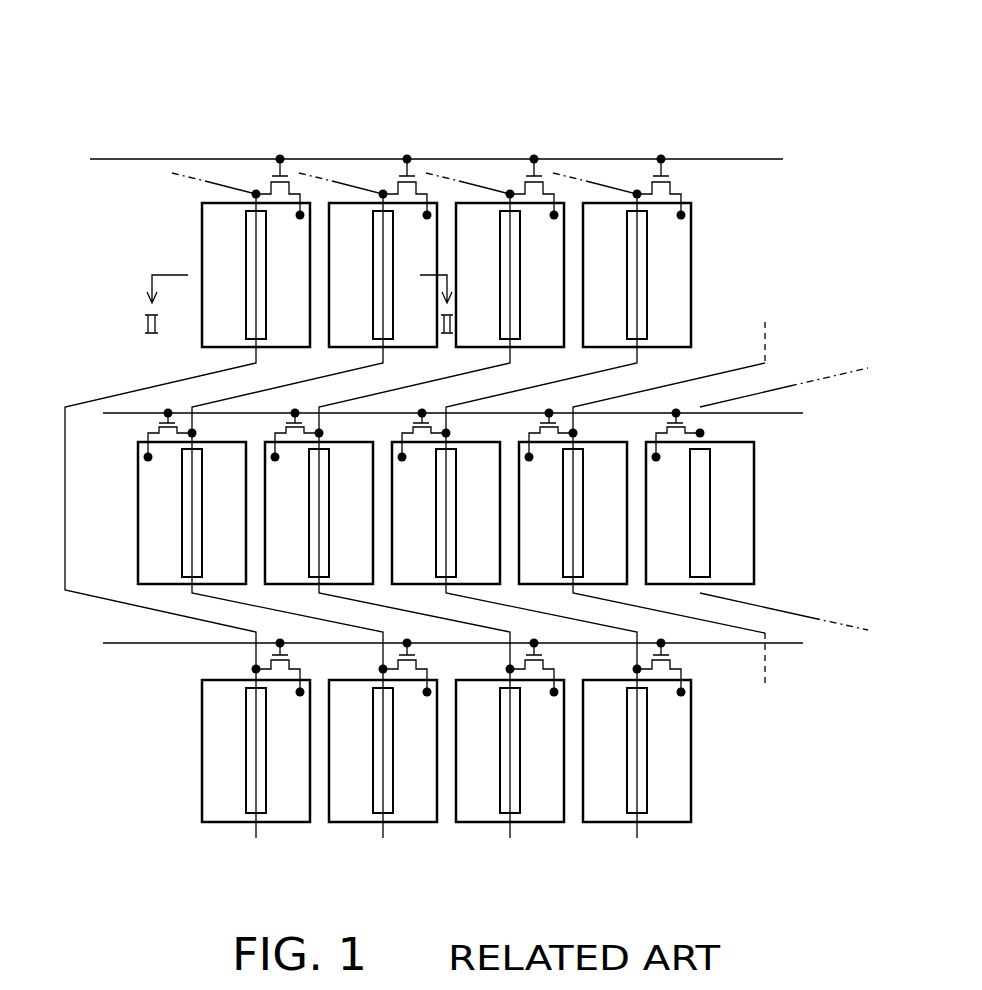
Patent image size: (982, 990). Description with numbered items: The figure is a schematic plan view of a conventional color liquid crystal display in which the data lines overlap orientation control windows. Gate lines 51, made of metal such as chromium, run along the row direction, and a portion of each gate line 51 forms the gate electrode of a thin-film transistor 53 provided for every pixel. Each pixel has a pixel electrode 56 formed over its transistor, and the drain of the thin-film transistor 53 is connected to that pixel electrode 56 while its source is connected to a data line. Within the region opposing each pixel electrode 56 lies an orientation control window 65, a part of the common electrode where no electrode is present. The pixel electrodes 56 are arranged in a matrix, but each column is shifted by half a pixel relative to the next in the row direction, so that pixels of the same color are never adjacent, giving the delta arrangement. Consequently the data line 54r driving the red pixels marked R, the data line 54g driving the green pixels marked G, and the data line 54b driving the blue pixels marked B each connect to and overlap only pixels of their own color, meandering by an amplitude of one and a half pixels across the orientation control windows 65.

The gate line 51 is at (463, 400).
The thin-film transistor 53 is at (546, 175).
The data line driving red pixels 54r is at (183, 172).
The data line driving green pixels 54g is at (312, 173).
The data line driving blue pixels 54b is at (440, 173).
The pixel electrode 56 is at (693, 302).
The orientation control window 65 is at (648, 252).